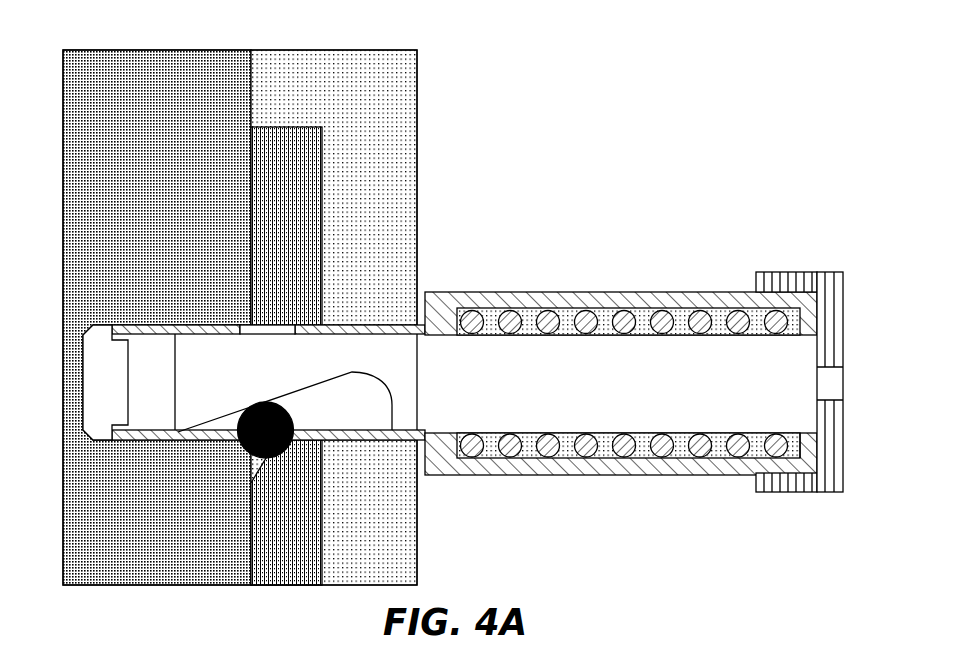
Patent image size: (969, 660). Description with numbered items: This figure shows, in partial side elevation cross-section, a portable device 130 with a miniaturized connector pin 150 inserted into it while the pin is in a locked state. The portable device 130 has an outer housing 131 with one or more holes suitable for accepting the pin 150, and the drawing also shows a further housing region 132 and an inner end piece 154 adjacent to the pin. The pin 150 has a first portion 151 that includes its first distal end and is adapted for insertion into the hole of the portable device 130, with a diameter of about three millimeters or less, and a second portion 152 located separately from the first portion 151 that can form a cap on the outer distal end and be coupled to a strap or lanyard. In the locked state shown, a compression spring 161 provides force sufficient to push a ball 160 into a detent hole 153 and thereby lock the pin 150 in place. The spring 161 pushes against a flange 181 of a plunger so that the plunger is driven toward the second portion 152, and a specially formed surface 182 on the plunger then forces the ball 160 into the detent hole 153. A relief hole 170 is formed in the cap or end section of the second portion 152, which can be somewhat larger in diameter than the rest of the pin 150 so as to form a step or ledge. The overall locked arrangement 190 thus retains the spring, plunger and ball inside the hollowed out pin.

The portable device 130 is at (279, 317).
The outer housing 131 is at (326, 163).
The second housing portion 132 is at (273, 250).
The pin 150 is at (622, 260).
The first portion 151 is at (120, 323).
The second portion 152 is at (762, 274).
The detent hole 153 is at (248, 323).
The end cap 154 is at (88, 388).
The ball 160 is at (252, 458).
The compression spring 161 is at (570, 450).
The relief hole 170 is at (858, 385).
The flange 181 is at (811, 448).
The specially formed surface 182 is at (303, 374).
The valve assembly 190 is at (471, 317).